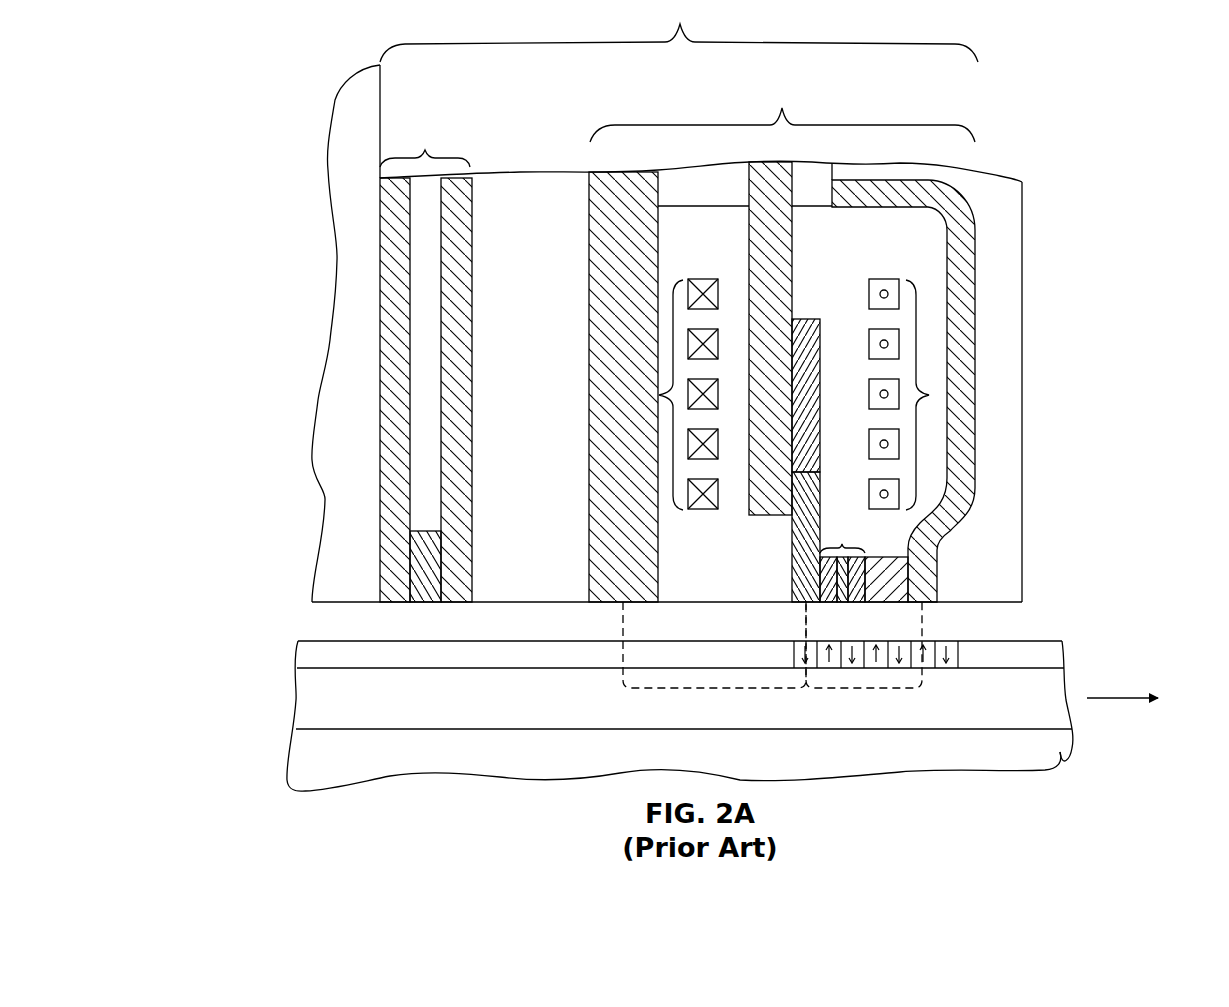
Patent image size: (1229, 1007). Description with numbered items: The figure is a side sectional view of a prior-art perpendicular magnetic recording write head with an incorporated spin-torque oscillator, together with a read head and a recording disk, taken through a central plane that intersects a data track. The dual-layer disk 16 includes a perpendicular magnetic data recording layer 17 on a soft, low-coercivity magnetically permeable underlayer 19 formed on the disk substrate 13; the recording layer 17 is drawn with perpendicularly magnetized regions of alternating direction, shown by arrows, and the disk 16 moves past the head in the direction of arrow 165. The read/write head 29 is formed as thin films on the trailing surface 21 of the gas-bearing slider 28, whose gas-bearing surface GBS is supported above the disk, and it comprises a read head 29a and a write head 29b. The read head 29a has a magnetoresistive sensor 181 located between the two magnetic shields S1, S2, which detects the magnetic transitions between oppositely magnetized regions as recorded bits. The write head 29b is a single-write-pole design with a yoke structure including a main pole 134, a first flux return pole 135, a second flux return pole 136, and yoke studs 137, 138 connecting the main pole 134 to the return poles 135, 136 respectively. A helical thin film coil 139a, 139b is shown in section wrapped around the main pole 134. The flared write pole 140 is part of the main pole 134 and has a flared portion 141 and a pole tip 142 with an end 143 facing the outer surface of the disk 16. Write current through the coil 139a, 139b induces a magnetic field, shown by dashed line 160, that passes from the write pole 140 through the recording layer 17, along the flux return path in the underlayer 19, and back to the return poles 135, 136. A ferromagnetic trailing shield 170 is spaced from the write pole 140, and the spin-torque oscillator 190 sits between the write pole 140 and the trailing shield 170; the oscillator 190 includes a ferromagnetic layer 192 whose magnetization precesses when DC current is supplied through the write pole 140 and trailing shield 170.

The disk substrate 13 is at (1067, 752).
The dual-layer disk 16 is at (668, 709).
The perpendicular magnetic data recording layer (RL) 17 is at (1058, 656).
The soft underlayer (SUL) 19 is at (1058, 690).
The trailing surface 21 is at (383, 98).
The slider 28 is at (330, 127).
The read/write head 29 is at (679, 31).
The read head 29a is at (425, 143).
The write head 29b is at (782, 110).
The main pole 134 is at (763, 247).
The first flux return pole 135 is at (601, 248).
The second flux return pole 136 is at (975, 432).
The yoke stud 137 is at (695, 180).
The yoke stud 138 is at (818, 170).
The thin film coil section 139a is at (659, 395).
The thin film coil section 139b is at (948, 394).
The write pole (WP) 140 is at (803, 317).
The flared portion 141 is at (797, 527).
The pole tip 142 is at (799, 597).
The end 143 is at (798, 606).
The magnetic field 160 is at (643, 690).
The arrow 165 is at (1135, 690).
The trailing shield (TS) 170 is at (905, 576).
The magnetoresistive (MR) sensor 181 is at (428, 597).
The spin-torque oscillator (STO) 190 is at (845, 560).
The ferromagnetic layer 192 is at (843, 605).
The magnetic shield S1 is at (393, 450).
The magnetic shield S2 is at (458, 452).
The gas-bearing surface GBS is at (344, 604).